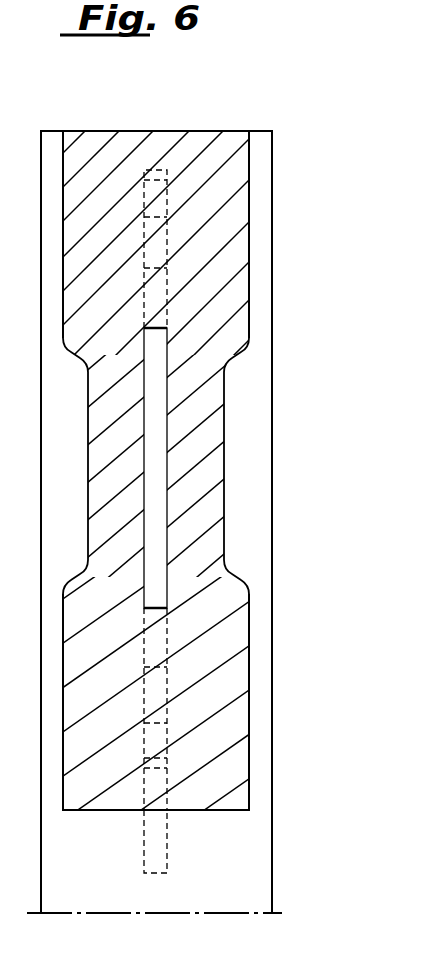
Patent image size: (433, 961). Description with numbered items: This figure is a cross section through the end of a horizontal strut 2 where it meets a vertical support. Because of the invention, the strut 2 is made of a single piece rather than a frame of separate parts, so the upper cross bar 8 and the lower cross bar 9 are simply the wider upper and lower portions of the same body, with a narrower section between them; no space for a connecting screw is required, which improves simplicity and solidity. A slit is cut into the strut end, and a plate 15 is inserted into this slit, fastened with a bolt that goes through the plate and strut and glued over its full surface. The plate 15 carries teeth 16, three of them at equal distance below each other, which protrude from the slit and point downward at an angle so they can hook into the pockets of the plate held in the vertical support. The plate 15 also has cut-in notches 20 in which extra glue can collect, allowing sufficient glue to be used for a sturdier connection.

The horizontal strut 2 is at (258, 196).
The upper cross bar 8 is at (228, 150).
The lower cross bar 9 is at (232, 733).
The plate 15 is at (140, 503).
The teeth 16 is at (158, 837).
The cut-in notches 20 is at (157, 228).